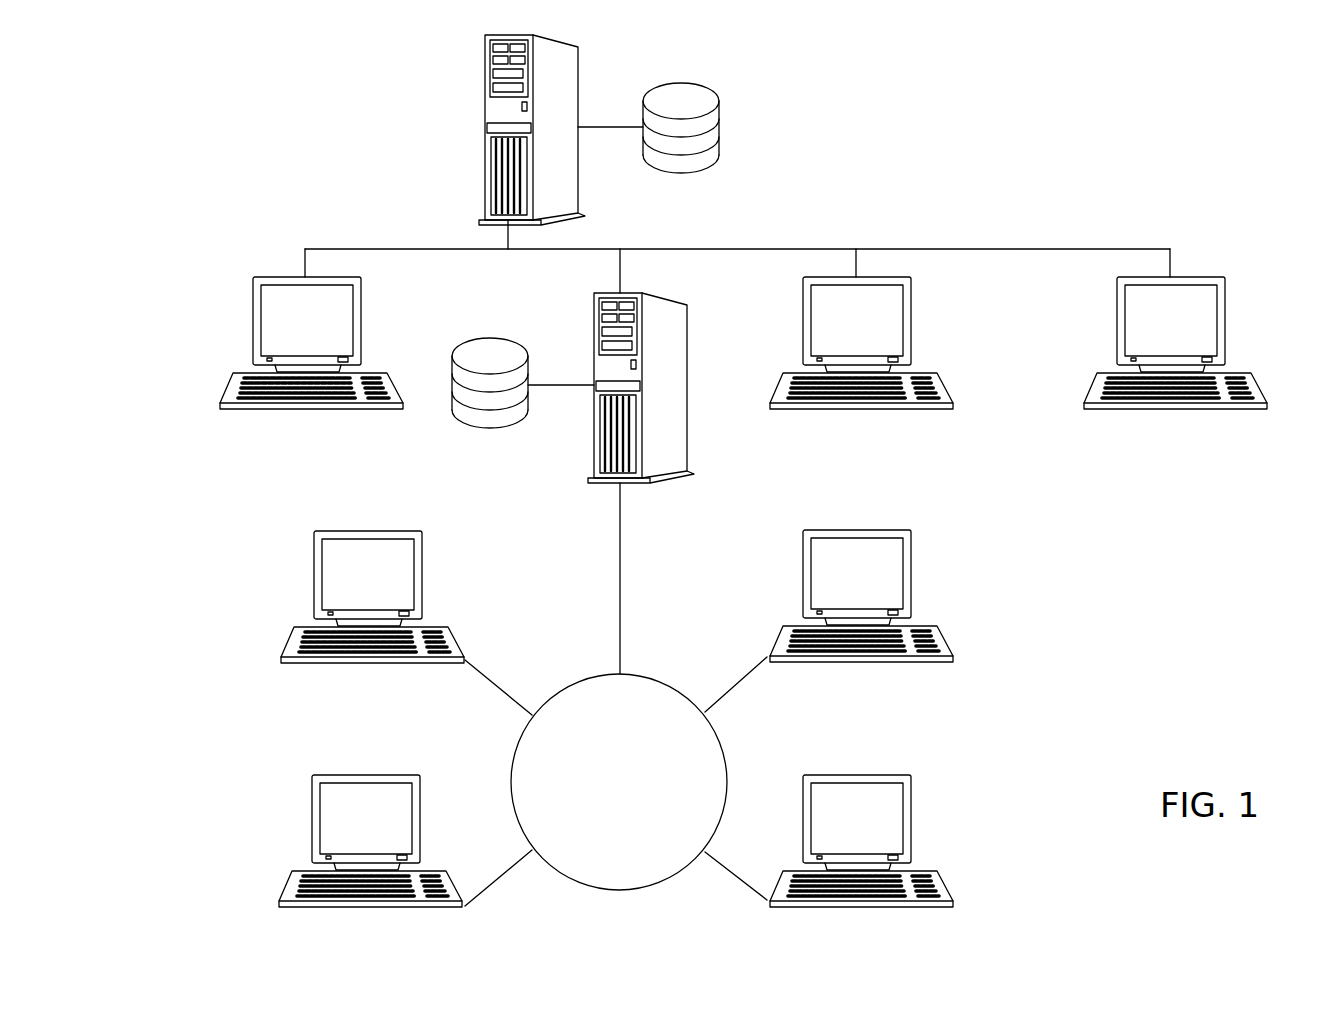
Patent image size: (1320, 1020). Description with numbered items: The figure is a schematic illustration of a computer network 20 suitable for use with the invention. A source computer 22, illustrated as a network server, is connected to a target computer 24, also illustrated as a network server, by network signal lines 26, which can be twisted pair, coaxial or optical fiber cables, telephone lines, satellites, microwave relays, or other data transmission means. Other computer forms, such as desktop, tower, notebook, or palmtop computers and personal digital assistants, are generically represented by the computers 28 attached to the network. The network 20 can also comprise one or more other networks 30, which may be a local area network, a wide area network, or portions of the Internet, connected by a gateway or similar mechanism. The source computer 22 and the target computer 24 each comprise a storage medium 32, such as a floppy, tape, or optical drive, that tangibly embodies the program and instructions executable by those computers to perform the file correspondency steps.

The computer network 20 is at (295, 144).
The source computer 22 is at (485, 96).
The target computer 24 is at (687, 450).
The network signal lines 26 is at (1013, 249).
The computers 28 is at (253, 317).
The other networks 30 is at (557, 690).
The storage medium 32 is at (719, 128).